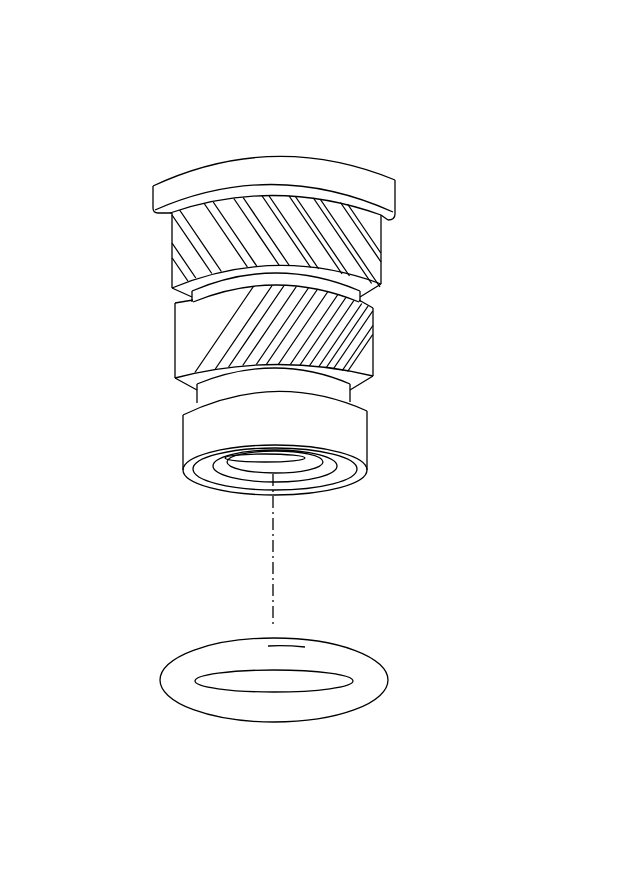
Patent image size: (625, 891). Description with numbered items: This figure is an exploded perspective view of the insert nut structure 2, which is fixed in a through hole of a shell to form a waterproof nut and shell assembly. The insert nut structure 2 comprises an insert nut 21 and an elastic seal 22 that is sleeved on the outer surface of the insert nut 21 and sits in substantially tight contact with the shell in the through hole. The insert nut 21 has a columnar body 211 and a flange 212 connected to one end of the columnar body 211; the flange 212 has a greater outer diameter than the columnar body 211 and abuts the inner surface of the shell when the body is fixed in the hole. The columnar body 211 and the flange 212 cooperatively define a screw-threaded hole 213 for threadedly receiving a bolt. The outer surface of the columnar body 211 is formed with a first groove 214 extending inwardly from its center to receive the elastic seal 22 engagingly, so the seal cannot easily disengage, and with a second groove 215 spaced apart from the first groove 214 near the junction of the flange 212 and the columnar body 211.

The insert nut structure 2 is at (182, 108).
The insert nut 21 is at (380, 350).
The columnar body 211 is at (370, 258).
The flange 212 is at (373, 182).
The screw-threaded hole 213 is at (253, 470).
The first groove 214 is at (146, 311).
The second groove 215 is at (155, 223).
The elastic seal 22 is at (367, 657).